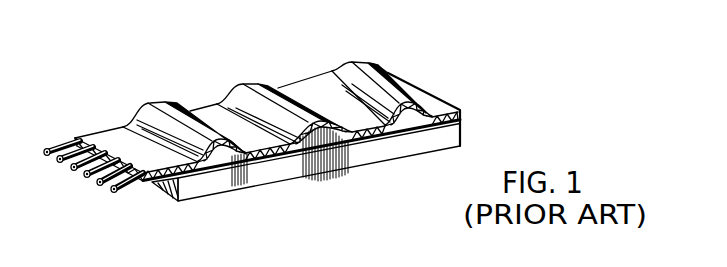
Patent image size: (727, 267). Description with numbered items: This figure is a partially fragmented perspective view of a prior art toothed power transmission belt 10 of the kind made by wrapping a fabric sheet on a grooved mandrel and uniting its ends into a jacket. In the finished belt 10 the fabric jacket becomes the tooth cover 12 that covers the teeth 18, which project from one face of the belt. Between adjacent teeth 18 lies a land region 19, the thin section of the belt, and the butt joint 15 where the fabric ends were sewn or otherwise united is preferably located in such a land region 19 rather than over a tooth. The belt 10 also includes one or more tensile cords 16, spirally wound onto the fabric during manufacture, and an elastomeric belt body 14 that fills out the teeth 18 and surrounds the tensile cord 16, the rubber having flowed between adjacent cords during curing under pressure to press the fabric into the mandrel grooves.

The toothed belt 10 is at (437, 37).
The tooth cover 12 is at (436, 98).
The elastomeric belt body 14 is at (192, 194).
The butt joint 15 is at (300, 158).
The tensile cord 16 is at (128, 188).
The teeth 18 is at (250, 86).
The land region 19 is at (308, 96).